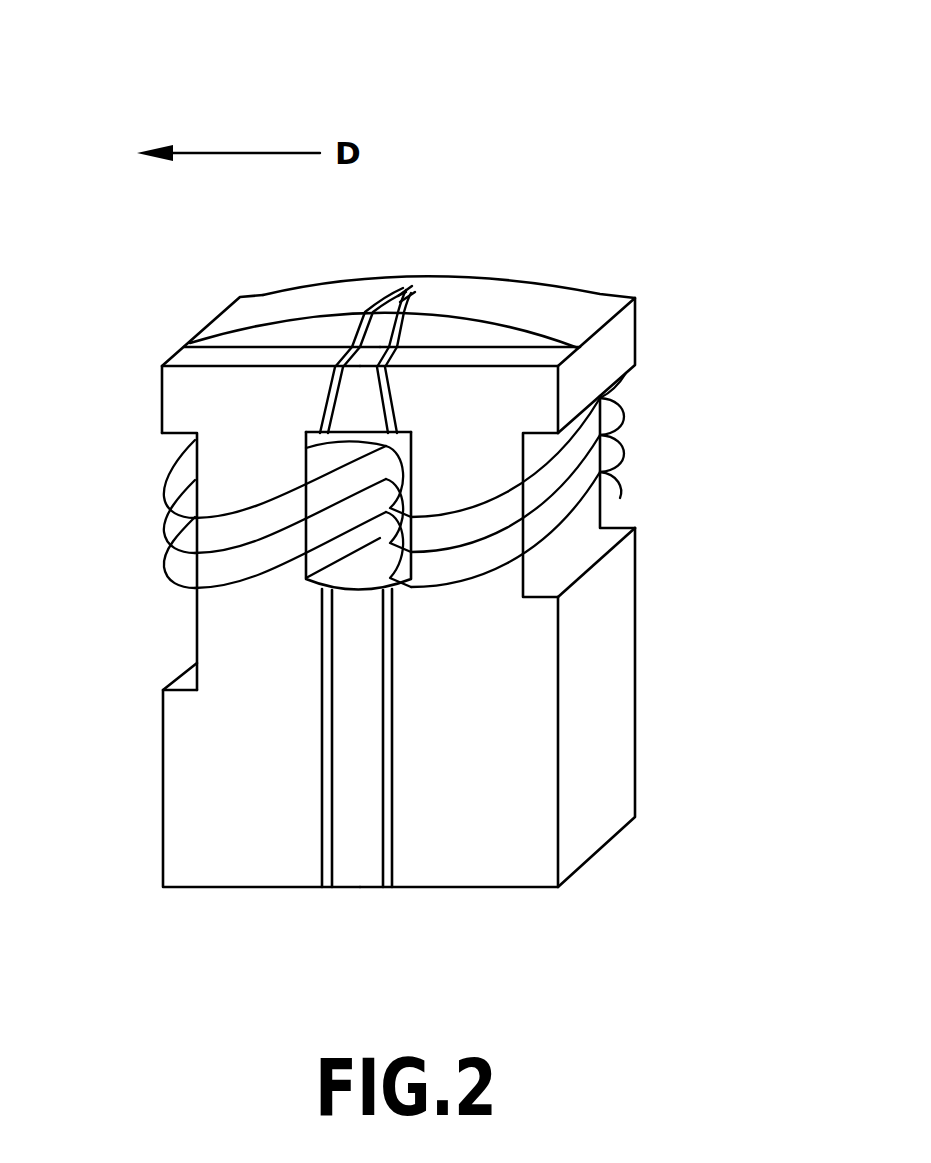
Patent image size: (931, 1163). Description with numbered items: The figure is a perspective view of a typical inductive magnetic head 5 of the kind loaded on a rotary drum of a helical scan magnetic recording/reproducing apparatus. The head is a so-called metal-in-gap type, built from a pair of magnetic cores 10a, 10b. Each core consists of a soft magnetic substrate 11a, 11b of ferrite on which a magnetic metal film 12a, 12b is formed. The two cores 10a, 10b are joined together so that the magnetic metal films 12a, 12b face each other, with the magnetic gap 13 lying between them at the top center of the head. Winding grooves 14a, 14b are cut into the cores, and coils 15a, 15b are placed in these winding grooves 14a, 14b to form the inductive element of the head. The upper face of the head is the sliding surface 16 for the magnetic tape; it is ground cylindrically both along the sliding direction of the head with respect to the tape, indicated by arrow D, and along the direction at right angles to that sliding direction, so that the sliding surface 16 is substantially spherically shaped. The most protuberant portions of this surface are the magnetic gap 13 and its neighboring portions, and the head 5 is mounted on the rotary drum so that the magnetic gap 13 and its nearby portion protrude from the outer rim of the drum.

The inductive magnetic head 5 is at (676, 156).
The magnetic core 10a is at (678, 312).
The magnetic core 10b is at (184, 306).
The soft magnetic substrate 11a is at (610, 708).
The soft magnetic substrate 11b is at (193, 792).
The magnetic metal film 12a is at (407, 288).
The magnetic metal film 12b is at (366, 312).
The magnetic gap 13 is at (405, 290).
The winding groove 14a is at (566, 548).
The winding groove 14b is at (197, 638).
The coil 15a is at (622, 422).
The coil 15b is at (163, 527).
The sliding surface 16 is at (548, 308).